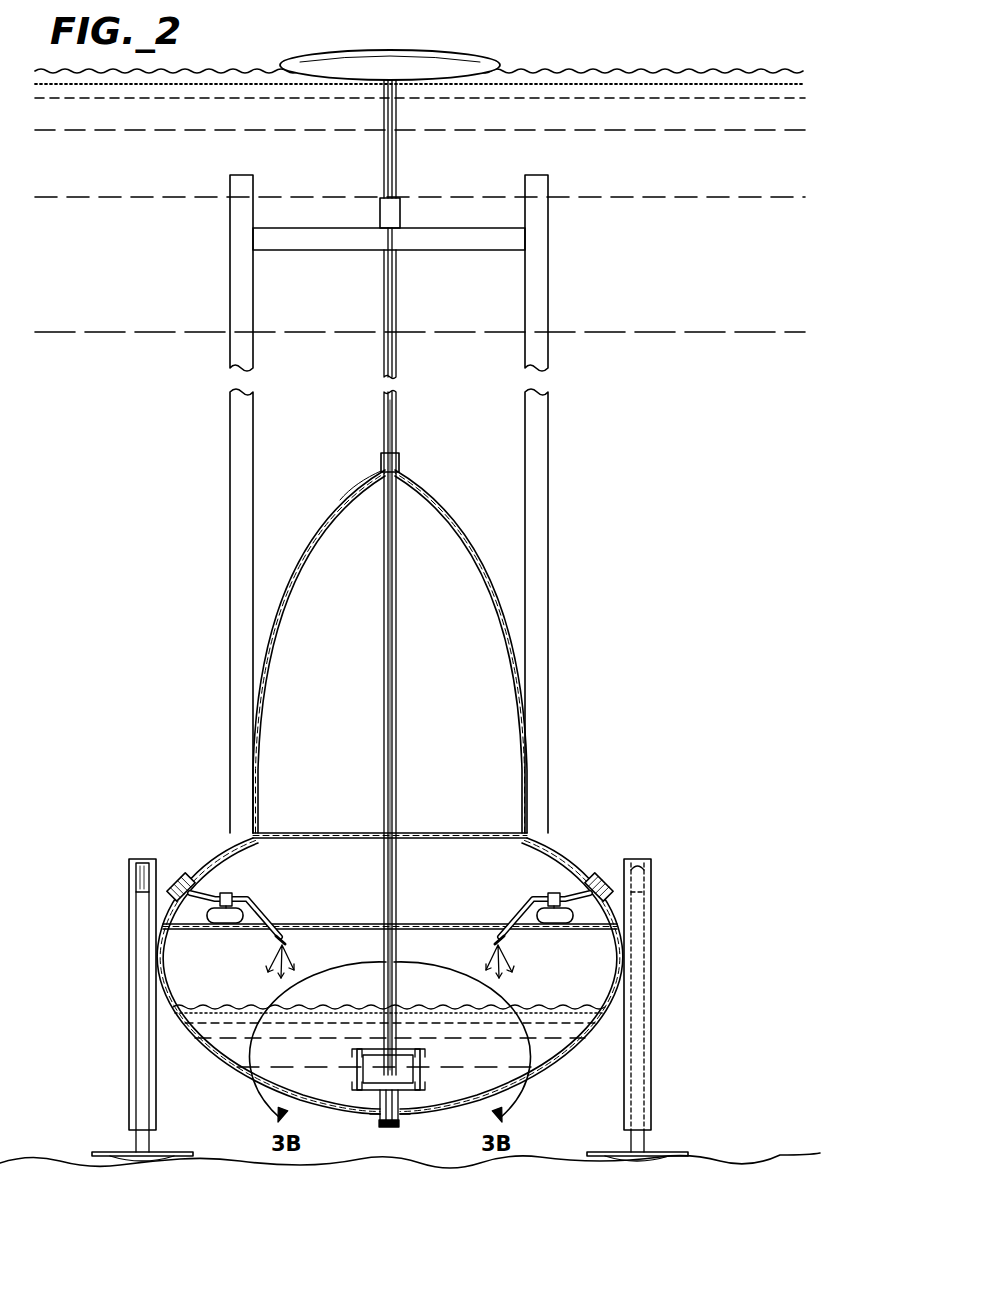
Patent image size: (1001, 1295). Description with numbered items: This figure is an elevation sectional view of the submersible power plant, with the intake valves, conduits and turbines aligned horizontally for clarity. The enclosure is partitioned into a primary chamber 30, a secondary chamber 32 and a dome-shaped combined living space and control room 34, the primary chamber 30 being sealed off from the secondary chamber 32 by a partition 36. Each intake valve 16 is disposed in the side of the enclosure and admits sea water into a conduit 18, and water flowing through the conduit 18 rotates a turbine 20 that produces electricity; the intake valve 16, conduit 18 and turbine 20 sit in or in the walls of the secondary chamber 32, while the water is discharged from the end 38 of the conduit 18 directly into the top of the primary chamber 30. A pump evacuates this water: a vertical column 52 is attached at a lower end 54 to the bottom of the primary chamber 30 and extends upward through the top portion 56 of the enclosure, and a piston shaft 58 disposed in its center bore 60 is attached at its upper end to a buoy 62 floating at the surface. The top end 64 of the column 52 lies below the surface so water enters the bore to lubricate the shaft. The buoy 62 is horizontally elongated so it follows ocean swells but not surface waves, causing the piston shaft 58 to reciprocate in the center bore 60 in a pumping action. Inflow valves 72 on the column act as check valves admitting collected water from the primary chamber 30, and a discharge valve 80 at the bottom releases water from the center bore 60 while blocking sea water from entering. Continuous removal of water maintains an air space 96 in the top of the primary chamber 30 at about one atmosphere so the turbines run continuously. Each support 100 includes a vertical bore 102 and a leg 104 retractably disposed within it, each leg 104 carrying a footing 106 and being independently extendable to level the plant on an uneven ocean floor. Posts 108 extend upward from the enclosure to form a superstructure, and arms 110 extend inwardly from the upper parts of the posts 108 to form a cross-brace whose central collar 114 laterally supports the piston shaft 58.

The intake valve 16 is at (180, 875).
The conduit 18 is at (242, 896).
The turbine 20 is at (225, 923).
The primary chamber 30 is at (437, 1009).
The secondary chamber 32 is at (548, 847).
The combined living space and control room 34 is at (436, 503).
The partition 36 is at (302, 925).
The end of conduit 38 is at (286, 940).
The vertical column 52 is at (390, 642).
The lower end of column 54 is at (400, 1108).
The top portion of enclosure 56 is at (352, 482).
The piston shaft 58 is at (397, 312).
The center bore 60 is at (393, 720).
The buoy 62 is at (440, 52).
The top end of column 64 is at (400, 462).
The inflow valve 72 is at (346, 1073).
The discharge valve 80 is at (386, 1133).
The air space 96 is at (553, 985).
The support 100 is at (130, 928).
The vertical bore 102 is at (638, 868).
The leg 104 is at (140, 982).
The footing 106 is at (108, 1152).
The post 108 is at (549, 312).
The arm 110 is at (490, 227).
The collar 114 is at (400, 212).